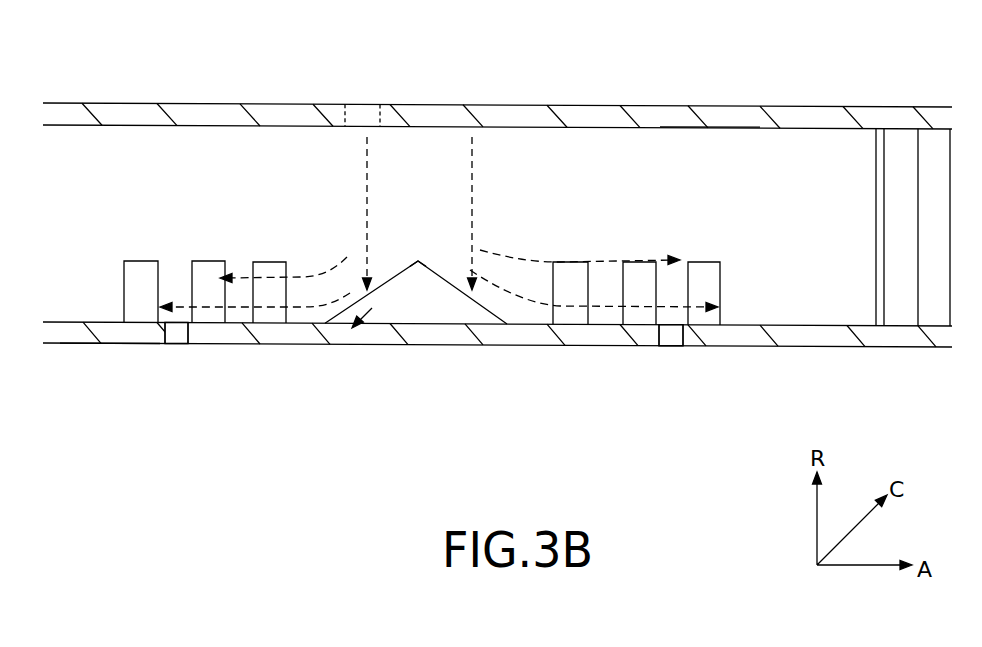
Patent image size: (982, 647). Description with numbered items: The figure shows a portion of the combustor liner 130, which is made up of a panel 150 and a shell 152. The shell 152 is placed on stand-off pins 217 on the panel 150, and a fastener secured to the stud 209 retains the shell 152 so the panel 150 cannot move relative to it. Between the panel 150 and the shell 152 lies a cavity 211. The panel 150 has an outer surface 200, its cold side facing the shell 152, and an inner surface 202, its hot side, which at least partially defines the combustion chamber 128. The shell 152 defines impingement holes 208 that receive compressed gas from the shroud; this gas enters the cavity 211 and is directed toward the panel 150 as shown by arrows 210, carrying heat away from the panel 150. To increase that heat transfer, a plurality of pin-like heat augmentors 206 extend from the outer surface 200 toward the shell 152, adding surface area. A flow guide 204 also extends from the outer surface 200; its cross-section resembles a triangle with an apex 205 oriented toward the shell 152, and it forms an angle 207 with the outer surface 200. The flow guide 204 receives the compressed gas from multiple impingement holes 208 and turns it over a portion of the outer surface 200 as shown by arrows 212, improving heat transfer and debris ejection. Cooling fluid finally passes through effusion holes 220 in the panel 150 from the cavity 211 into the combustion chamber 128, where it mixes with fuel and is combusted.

The combustor liner 130 is at (94, 98).
The impingement hole 208 is at (358, 102).
The shell 152 is at (700, 127).
The stand-off pins 217 is at (884, 128).
The stud 209 is at (932, 155).
The cavity 211 is at (748, 177).
The arrows 210 is at (490, 164).
The outer surface 200 is at (88, 322).
The inner surface 202 is at (112, 344).
The effusion holes 220 is at (178, 338).
The combustion chamber 128 is at (387, 395).
The heat augmentors 206 is at (722, 266).
The flow guide 204 is at (448, 277).
The apex 205 is at (418, 261).
The angle 207 is at (368, 318).
The arrows 212 is at (522, 251).
The panel 150 is at (760, 300).